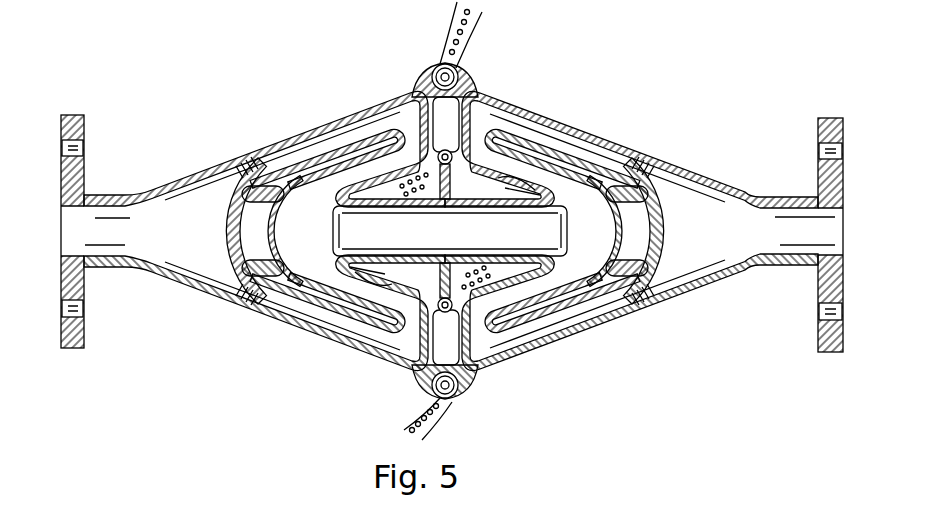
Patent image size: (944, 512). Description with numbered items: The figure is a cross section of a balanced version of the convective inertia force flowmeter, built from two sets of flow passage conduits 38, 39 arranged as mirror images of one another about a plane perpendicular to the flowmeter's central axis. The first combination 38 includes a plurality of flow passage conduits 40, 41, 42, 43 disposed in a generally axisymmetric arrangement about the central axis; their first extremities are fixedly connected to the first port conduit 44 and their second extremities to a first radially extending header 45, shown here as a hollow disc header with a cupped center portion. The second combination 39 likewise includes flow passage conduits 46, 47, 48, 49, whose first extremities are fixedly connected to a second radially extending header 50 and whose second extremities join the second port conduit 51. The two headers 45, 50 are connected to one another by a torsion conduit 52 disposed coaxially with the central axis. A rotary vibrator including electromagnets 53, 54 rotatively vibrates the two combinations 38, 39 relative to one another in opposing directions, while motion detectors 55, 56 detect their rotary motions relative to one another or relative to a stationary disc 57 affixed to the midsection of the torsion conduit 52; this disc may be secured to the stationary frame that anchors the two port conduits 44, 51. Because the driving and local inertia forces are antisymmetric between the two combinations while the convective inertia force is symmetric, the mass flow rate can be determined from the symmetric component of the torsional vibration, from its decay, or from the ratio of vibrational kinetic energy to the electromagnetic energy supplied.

The first combination of flow passage conduits 38 is at (324, 119).
The second combination of flow passage conduits 39 is at (631, 158).
The flow passage conduit 40 is at (314, 149).
The flow passage conduit 41 is at (273, 190).
The flow passage conduit 42 is at (302, 308).
The flow passage conduit 43 is at (290, 305).
The first port conduit 44 is at (113, 233).
The first radially extending header 45 is at (378, 117).
The flow passage conduit 46 is at (583, 128).
The flow passage conduit 47 is at (616, 187).
The flow passage conduit 48 is at (638, 292).
The flow passage conduit 49 is at (598, 310).
The second radially extending header 50 is at (499, 150).
The second port conduit 51 is at (787, 230).
The torsion conduit 52 is at (527, 233).
The electromagnet 53 is at (440, 65).
The electromagnet 54 is at (445, 396).
The motion detector 55 is at (527, 137).
The motion detector 56 is at (403, 366).
The stationary disc 57 is at (425, 262).